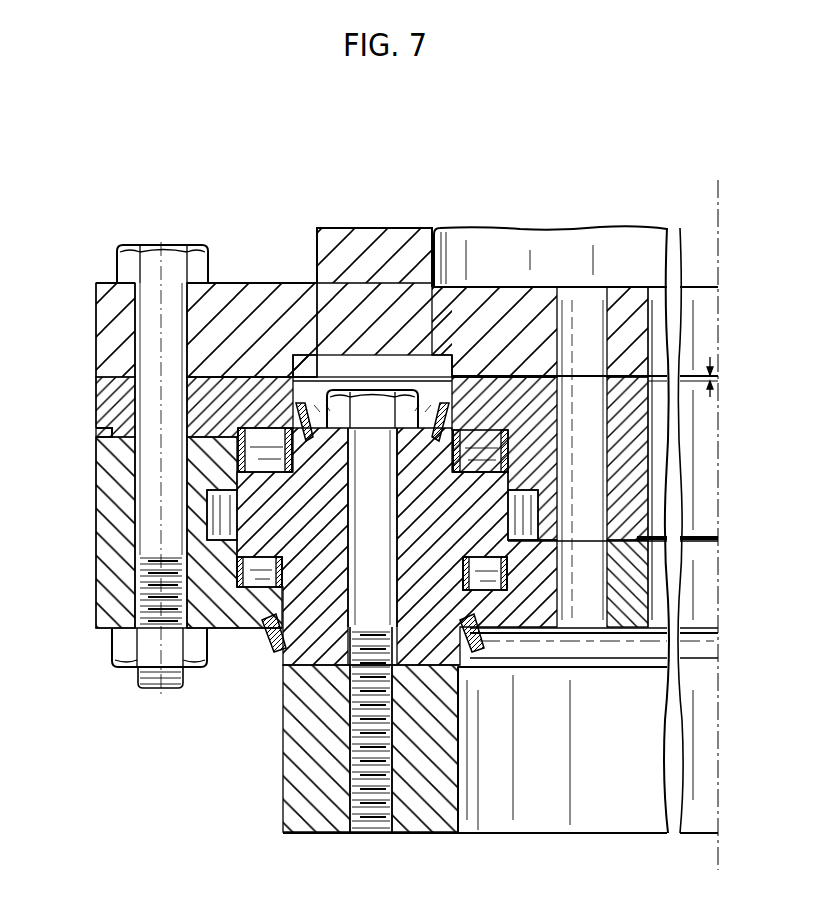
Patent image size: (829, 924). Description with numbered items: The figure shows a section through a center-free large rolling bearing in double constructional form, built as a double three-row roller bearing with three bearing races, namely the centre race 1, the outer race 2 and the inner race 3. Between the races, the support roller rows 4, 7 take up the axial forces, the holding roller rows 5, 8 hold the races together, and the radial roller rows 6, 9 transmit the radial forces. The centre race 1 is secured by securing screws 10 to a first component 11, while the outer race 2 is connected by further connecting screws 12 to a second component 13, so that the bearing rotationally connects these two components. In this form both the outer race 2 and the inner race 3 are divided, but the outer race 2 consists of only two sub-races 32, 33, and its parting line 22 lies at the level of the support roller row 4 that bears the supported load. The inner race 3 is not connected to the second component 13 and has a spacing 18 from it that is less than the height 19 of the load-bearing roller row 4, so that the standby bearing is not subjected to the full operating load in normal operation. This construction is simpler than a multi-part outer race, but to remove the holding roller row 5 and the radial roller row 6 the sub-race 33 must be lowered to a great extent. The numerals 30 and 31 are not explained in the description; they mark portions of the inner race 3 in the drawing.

The centre race 1 is at (312, 628).
The outer race 2 is at (92, 531).
The inner race 3 is at (660, 472).
The support roller row 4 is at (255, 443).
The holding roller row 5 is at (257, 588).
The radial roller row 6 is at (212, 508).
The support roller row 7 is at (492, 444).
The holding roller row 8 is at (492, 591).
The radial roller row 9 is at (525, 513).
The securing screws 10 is at (409, 398).
The first component 11 is at (430, 795).
The connecting screws 12 is at (200, 258).
The second component 13 is at (366, 248).
The spacing 18 is at (714, 374).
The height 19 is at (331, 428).
The parting line 22 is at (103, 430).
The upper housing part 30 is at (622, 441).
The lower housing part 31 is at (630, 603).
The sub-race 32 is at (107, 392).
The sub-race 33 is at (118, 583).